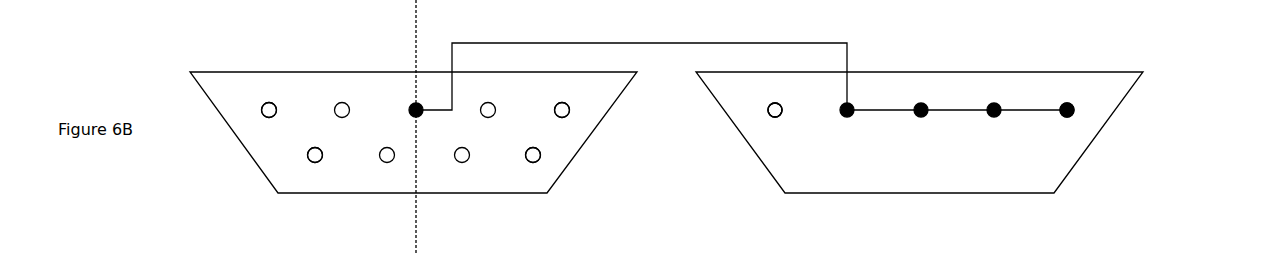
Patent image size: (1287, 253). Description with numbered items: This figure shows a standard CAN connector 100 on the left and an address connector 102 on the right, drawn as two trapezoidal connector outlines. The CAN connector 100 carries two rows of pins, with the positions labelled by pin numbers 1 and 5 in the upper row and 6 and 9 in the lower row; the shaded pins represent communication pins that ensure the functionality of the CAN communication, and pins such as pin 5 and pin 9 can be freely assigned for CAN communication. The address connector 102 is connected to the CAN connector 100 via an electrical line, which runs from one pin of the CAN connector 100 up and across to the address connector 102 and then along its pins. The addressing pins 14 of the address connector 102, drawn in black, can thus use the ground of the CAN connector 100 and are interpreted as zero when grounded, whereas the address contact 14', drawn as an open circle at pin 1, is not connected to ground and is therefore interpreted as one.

The CAN connector 100 is at (233, 132).
The address connector 102 is at (1100, 132).
The addressing pins 14 is at (777, 61).
The address contacts 14' is at (732, 131).
The pin 1 is at (509, 104).
The pin 5 is at (824, 101).
The pin 6 is at (310, 169).
The pin 9 is at (535, 170).